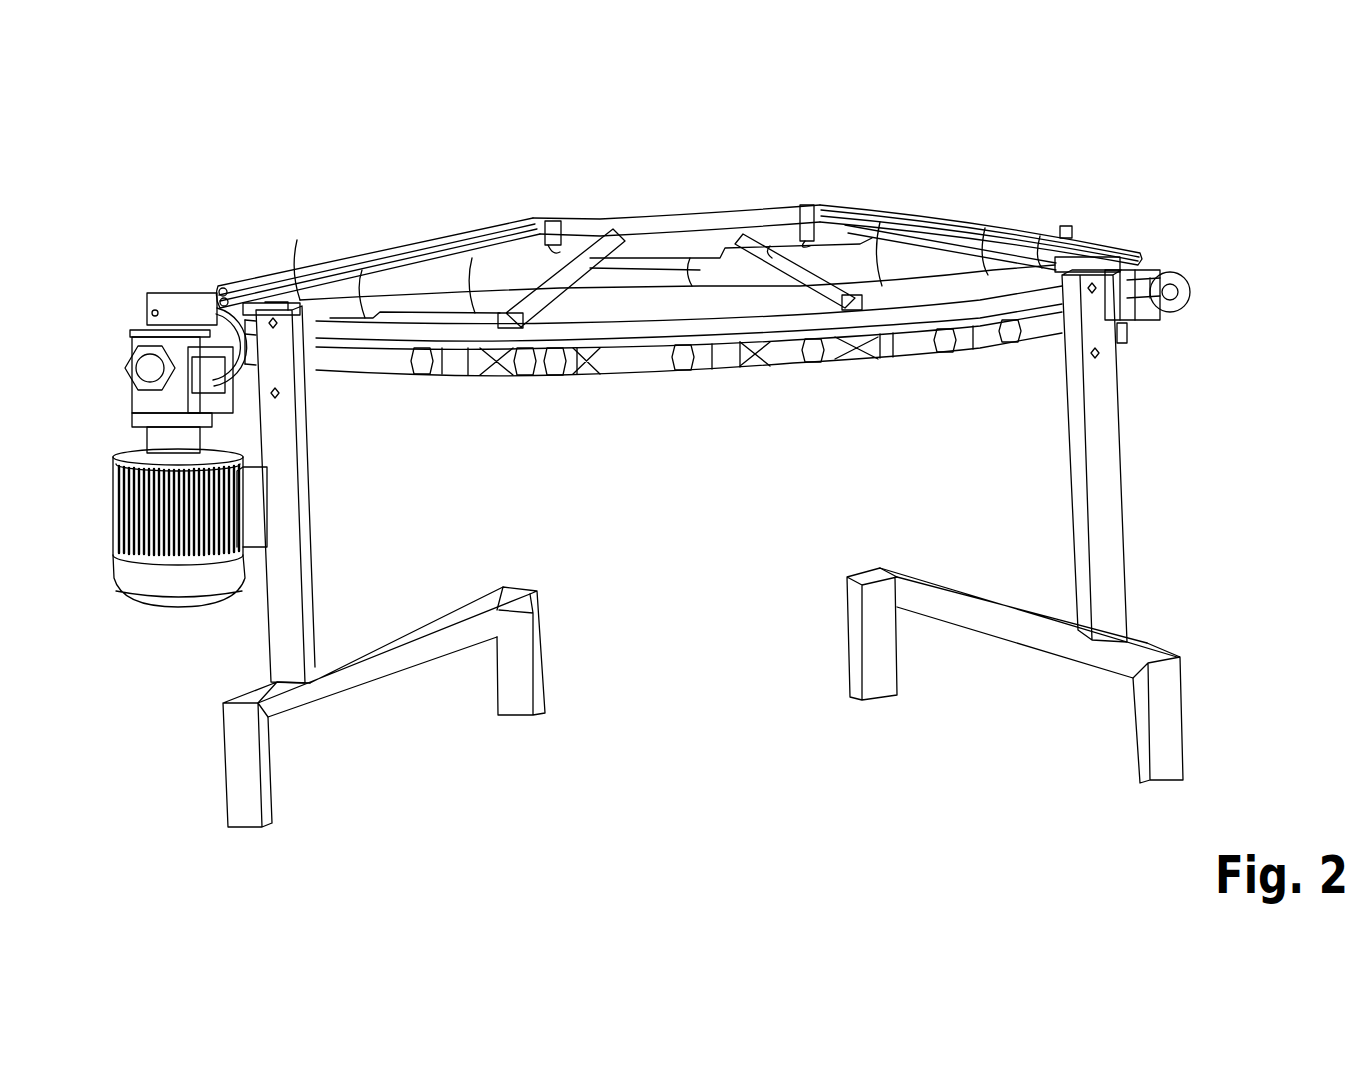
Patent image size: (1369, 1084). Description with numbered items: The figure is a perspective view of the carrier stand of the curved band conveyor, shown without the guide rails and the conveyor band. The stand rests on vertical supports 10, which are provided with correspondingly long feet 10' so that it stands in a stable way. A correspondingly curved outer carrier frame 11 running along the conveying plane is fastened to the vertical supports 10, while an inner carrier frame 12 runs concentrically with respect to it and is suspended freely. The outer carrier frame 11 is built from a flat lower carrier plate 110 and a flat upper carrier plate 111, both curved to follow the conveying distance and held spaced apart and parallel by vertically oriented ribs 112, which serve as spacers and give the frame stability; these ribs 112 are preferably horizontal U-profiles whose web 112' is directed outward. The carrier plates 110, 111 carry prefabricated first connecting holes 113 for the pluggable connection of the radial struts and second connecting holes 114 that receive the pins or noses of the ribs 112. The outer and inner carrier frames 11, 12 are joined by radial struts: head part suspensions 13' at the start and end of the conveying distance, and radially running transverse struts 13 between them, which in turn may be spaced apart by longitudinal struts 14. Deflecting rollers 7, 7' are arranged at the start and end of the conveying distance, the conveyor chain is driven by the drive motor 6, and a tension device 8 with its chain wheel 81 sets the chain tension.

The drive motor 6 is at (178, 578).
The deflecting roller 7 is at (981, 216).
The deflecting roller 7' is at (378, 237).
The tension device 8 is at (1172, 326).
The chain wheel 81 is at (1182, 268).
The vertical support 10 is at (691, 476).
The foot 10' is at (703, 694).
The outer carrier frame 11 is at (658, 382).
The inner carrier frame 12 is at (676, 226).
The transverse strut 13 is at (798, 308).
The head part suspension 13' is at (679, 204).
The longitudinal strut 14 is at (420, 312).
The lower carrier plate 110 is at (750, 320).
The upper carrier plate 111 is at (1005, 330).
The rib 112 is at (753, 425).
The web 112' is at (931, 382).
The first connecting hole 113 is at (517, 372).
The second connecting hole 114 is at (590, 372).